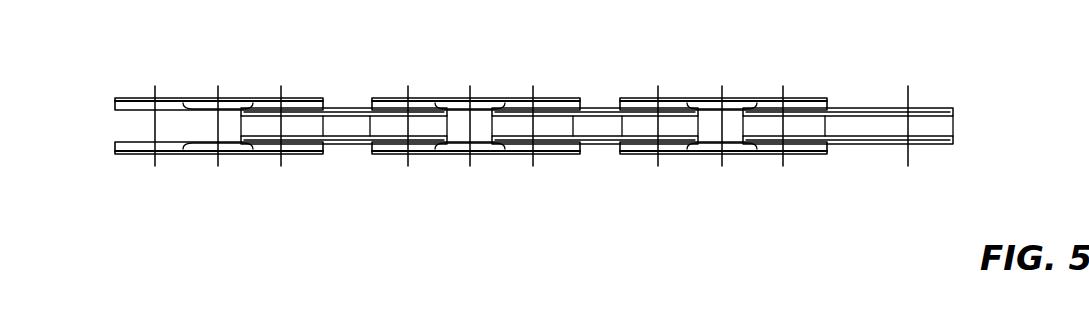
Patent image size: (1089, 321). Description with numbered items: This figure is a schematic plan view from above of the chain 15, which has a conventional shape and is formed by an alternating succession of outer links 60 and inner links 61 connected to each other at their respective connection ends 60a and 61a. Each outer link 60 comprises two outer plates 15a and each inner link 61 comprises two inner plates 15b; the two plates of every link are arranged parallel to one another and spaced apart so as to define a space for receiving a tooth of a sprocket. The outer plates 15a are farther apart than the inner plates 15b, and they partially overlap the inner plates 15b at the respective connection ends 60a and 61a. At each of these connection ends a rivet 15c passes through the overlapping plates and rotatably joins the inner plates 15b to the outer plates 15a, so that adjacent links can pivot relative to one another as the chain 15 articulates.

The chain 15 is at (534, 175).
The outer plate 15a is at (181, 96).
The inner plate 15b is at (344, 104).
The rivet 15c is at (277, 158).
The outer link 60 is at (471, 175).
The connection end of outer link 60a is at (553, 99).
The inner link 61 is at (597, 160).
The connection end of inner link 61a is at (521, 110).